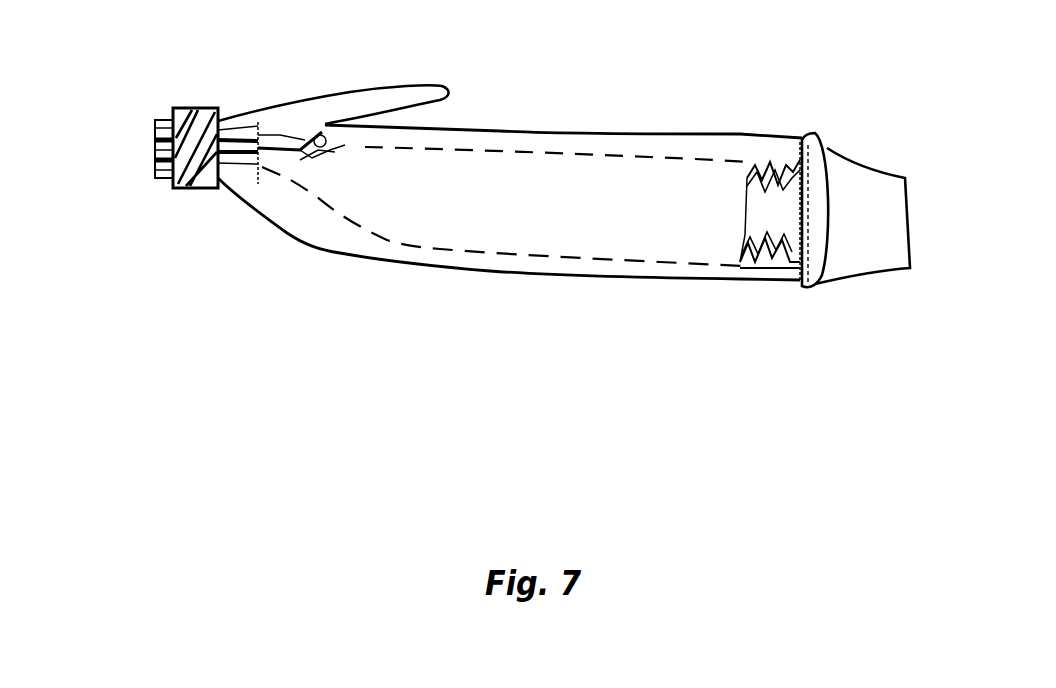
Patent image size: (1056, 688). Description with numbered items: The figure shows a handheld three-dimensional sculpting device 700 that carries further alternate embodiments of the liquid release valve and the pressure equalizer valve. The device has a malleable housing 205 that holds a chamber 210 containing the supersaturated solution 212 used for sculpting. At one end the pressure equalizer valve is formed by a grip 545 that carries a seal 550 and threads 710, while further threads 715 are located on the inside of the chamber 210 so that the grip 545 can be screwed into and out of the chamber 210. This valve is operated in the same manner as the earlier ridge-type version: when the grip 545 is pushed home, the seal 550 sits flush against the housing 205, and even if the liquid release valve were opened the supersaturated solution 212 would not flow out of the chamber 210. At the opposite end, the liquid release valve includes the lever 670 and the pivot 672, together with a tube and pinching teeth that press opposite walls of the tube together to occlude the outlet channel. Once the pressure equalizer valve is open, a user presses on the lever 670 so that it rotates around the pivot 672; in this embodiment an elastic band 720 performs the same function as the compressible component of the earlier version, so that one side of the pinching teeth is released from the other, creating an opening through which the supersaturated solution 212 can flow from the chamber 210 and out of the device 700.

The 3D device 700 is at (792, 486).
The housing 205 is at (490, 272).
The chamber 210 is at (516, 221).
The supersaturated solution 212 is at (407, 213).
The grip 545 is at (907, 218).
The seal 550 is at (822, 160).
The lever 670 is at (403, 88).
The pivot 672 is at (313, 130).
The threads 710 is at (762, 180).
The threads 715 is at (773, 267).
The elastic band 720 is at (178, 187).